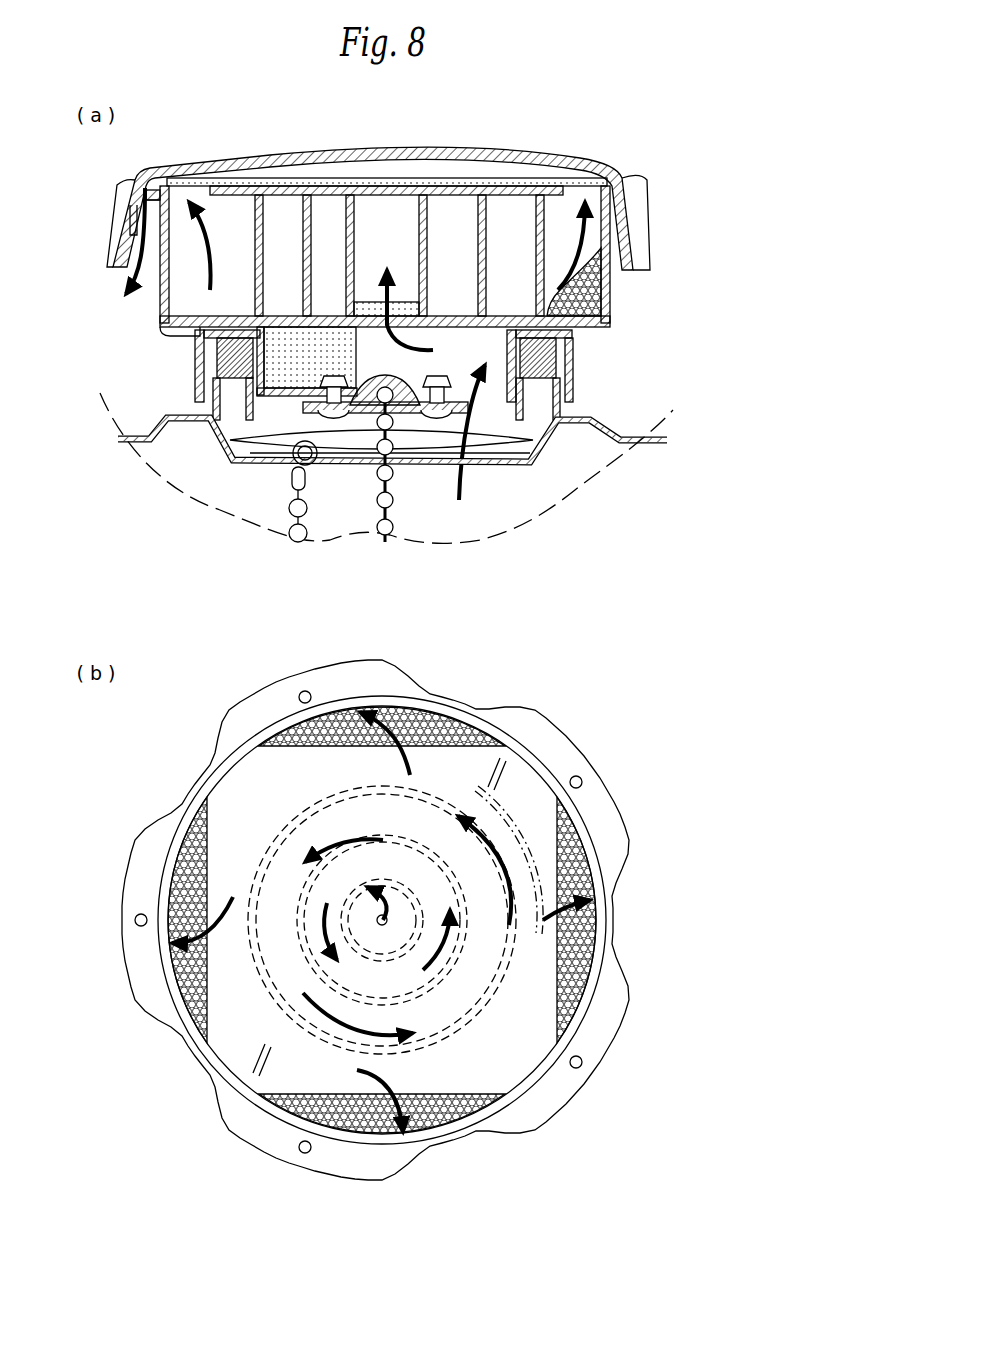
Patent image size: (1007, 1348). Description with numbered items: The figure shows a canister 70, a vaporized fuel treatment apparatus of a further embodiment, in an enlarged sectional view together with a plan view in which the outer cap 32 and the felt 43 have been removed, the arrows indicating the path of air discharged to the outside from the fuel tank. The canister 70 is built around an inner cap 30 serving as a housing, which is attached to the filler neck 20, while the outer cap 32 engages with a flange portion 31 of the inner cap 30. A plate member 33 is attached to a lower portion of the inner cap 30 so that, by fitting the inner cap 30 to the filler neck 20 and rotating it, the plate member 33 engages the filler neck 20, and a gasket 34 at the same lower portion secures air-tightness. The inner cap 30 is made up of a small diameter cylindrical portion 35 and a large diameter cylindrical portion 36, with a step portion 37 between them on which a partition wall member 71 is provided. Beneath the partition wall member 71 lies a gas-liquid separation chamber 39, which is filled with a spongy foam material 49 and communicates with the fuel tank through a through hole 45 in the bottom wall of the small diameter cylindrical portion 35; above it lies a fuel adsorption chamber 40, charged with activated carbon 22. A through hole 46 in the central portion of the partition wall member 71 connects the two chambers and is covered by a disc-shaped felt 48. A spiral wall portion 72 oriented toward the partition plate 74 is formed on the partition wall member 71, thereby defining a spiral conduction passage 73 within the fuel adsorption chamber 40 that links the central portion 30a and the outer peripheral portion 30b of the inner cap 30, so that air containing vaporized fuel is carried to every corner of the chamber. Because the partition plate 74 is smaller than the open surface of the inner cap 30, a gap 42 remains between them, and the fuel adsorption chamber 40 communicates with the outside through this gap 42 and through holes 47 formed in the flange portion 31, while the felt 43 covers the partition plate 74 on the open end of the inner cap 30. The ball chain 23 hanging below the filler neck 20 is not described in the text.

The filler neck 20 is at (473, 470).
The activated carbon 22 is at (610, 300).
The ball chain 23 is at (291, 508).
The inner cap 30 is at (618, 330).
The central portion 30a is at (388, 210).
The outer peripheral portion 30b is at (598, 232).
The flange portion 31 is at (143, 183).
The outer cap 32 is at (490, 152).
The plate member 33 is at (395, 408).
The gasket 34 is at (575, 364).
The small diameter cylindrical portion 35 is at (196, 360).
The large diameter cylindrical portion 36 is at (160, 298).
The step portion 37 is at (198, 333).
The gas-liquid separation chamber 39 is at (447, 358).
The fuel adsorption chamber 40 is at (219, 220).
The gap 42 is at (199, 196).
The felt 43 is at (348, 180).
The through hole 45 is at (490, 392).
The through hole 46 is at (378, 392).
The through holes 47 is at (128, 200).
The felt 48 is at (372, 304).
The foam material 49 is at (288, 340).
The canister 70 is at (642, 158).
The partition wall member 71 is at (446, 302).
The spiral wall portion 72 is at (312, 220).
The spiral conduction passage 73 is at (450, 205).
The partition plate 74 is at (302, 188).